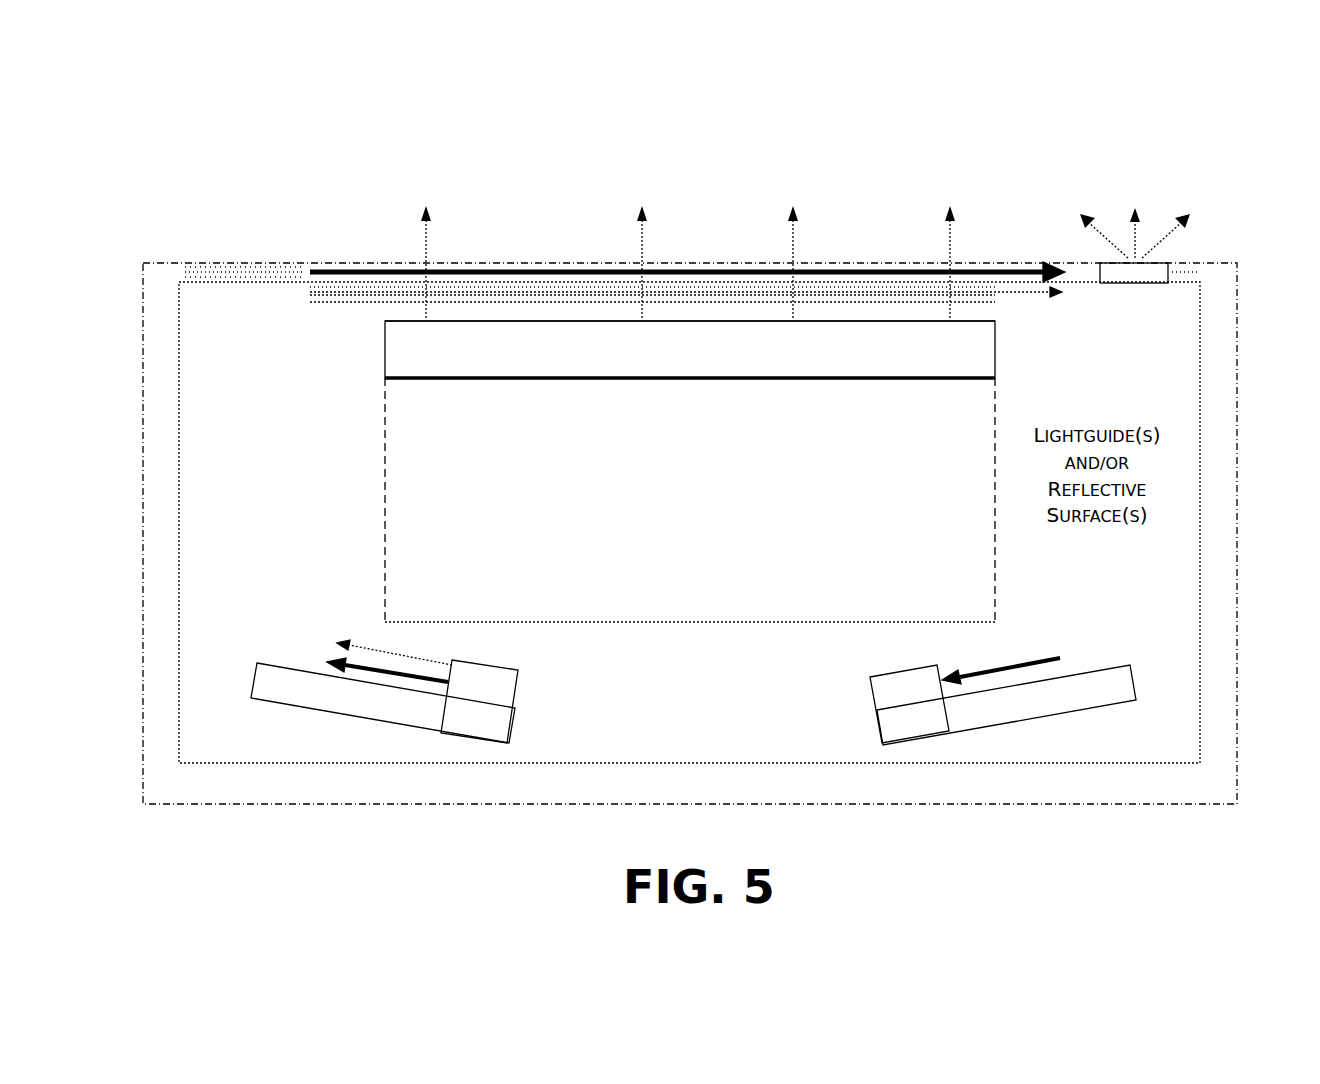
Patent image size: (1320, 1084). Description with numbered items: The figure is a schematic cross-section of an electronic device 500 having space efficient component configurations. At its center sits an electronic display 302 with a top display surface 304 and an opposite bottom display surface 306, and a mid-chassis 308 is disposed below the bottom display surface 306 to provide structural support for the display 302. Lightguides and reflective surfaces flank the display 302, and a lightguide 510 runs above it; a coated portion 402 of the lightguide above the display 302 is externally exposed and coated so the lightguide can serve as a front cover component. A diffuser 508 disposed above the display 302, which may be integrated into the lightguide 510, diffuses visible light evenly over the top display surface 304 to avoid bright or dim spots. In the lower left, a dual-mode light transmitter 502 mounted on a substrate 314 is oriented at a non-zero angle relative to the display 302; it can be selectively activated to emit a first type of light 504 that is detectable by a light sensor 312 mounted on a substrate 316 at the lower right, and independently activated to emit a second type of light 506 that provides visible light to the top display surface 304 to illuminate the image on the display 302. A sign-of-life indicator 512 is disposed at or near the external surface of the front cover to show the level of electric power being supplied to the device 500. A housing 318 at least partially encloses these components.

The electronic device 500 is at (186, 122).
The coated portion of the lightguide 402 is at (233, 272).
The top display surface 304 is at (440, 320).
The diffuser 508 is at (510, 305).
The electronic display 302 is at (690, 337).
The bottom display surface 306 is at (937, 375).
The sign-of-life indicator 512 is at (1158, 272).
The lightguide 510 is at (195, 387).
The mid-chassis 308 is at (675, 605).
The substrate 314 is at (472, 720).
The dual-mode light transmitter 502 is at (503, 693).
The first type of light 504 is at (428, 683).
The second type of light 506 is at (398, 657).
The light sensor 312 is at (887, 698).
The substrate 316 is at (955, 720).
The housing 318 is at (677, 800).